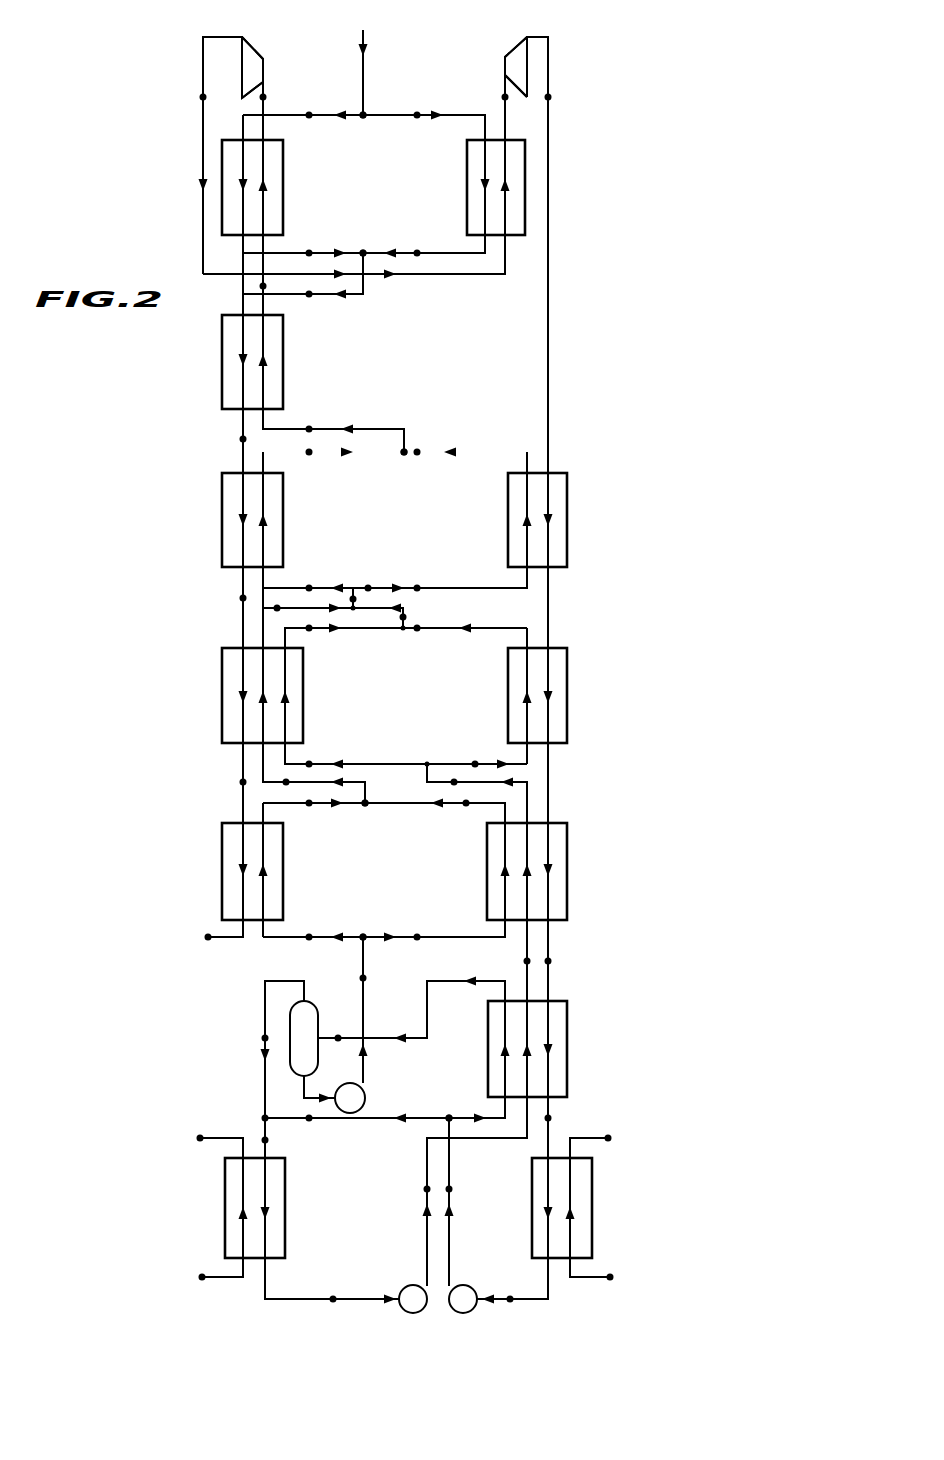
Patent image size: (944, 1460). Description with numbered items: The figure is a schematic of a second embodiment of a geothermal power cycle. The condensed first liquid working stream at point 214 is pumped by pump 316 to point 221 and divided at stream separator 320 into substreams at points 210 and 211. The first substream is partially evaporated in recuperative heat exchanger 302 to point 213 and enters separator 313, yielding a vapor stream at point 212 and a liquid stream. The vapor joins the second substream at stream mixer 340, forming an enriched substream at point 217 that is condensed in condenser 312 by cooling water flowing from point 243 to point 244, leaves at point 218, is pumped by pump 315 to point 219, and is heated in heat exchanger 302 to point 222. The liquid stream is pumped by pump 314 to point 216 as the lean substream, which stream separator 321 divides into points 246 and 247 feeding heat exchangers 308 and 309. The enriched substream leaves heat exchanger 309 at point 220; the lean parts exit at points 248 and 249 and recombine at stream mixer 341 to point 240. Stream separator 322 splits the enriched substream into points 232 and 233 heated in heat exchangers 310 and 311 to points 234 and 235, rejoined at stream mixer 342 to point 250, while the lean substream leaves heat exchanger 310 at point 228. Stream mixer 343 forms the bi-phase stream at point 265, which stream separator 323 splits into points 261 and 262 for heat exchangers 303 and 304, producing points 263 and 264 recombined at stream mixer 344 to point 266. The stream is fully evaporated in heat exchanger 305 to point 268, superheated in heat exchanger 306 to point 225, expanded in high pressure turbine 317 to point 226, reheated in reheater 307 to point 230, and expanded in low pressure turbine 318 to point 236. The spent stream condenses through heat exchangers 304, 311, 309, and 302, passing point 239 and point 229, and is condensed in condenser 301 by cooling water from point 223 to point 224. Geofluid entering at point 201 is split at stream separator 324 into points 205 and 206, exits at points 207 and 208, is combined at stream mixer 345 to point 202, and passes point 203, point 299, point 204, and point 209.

The condenser 301 is at (592, 1218).
The recuperative heat exchanger 302 is at (568, 1055).
The heat exchanger 303 is at (222, 524).
The recuperative heat exchanger 304 is at (567, 520).
The heat exchanger (boiler) 305 is at (222, 362).
The heat exchanger 306 is at (284, 191).
The reheater 307 is at (467, 190).
The heat exchanger 308 is at (222, 870).
The recuperative heat exchanger 309 is at (567, 878).
The heat exchanger 310 is at (222, 697).
The heat exchanger 311 is at (567, 700).
The condenser 312 is at (225, 1213).
The separator 313 is at (316, 1004).
The pump 314 is at (365, 1100).
The pump 315 is at (421, 1312).
The pump 316 is at (466, 1313).
The high pressure turbine 317 is at (256, 46).
The low pressure turbine 318 is at (514, 58).
The stream separator 320 is at (449, 1120).
The stream separator 321 is at (363, 937).
The stream separator 322 is at (427, 764).
The stream separator 323 is at (353, 588).
The stream separator 324 is at (363, 118).
The stream mixer 340 is at (248, 1114).
The stream mixer 341 is at (365, 806).
The stream mixer 342 is at (403, 624).
The stream mixer 343 is at (352, 611).
The stream mixer 344 is at (404, 455).
The stream mixer 345 is at (363, 252).
The point 201 is at (386, 102).
The point 202 is at (317, 307).
The point 203 is at (226, 439).
The point 204 is at (226, 782).
The point 205 is at (317, 129).
The point 206 is at (423, 102).
The point 207 is at (317, 241).
The point 208 is at (425, 241).
The point 209 is at (191, 937).
The point 210 is at (457, 1106).
The point 211 is at (321, 1132).
The point 212 is at (248, 1037).
The point 213 is at (348, 1025).
The point 214 is at (518, 1312).
The point 216 is at (387, 977).
The point 217 is at (288, 1144).
The point 218 is at (341, 1312).
The point 219 is at (410, 1189).
The point 220 is at (477, 792).
The point 221 is at (472, 1189).
The point 222 is at (509, 960).
The point 223 is at (634, 1277).
The point 224 is at (632, 1137).
The point 225 is at (286, 97).
The point 226 is at (186, 97).
The point 228 is at (275, 597).
The point 229 is at (573, 1117).
The point 230 is at (489, 97).
The point 232 is at (330, 751).
The point 233 is at (485, 751).
The point 234 is at (330, 641).
The point 235 is at (439, 641).
The point 236 is at (571, 97).
The point 239 is at (573, 960).
The point 240 is at (292, 792).
The point 243 is at (186, 1277).
The point 244 is at (182, 1137).
The point 246 is at (321, 924).
The point 247 is at (430, 924).
The point 248 is at (318, 817).
The point 249 is at (462, 806).
The point 250 is at (427, 610).
The point 261 is at (318, 576).
The point 262 is at (430, 576).
The point 263 is at (318, 466).
The point 264 is at (440, 440).
The point 265 is at (376, 598).
The point 266 is at (320, 417).
The point 268 is at (237, 287).
The point 299 is at (224, 599).